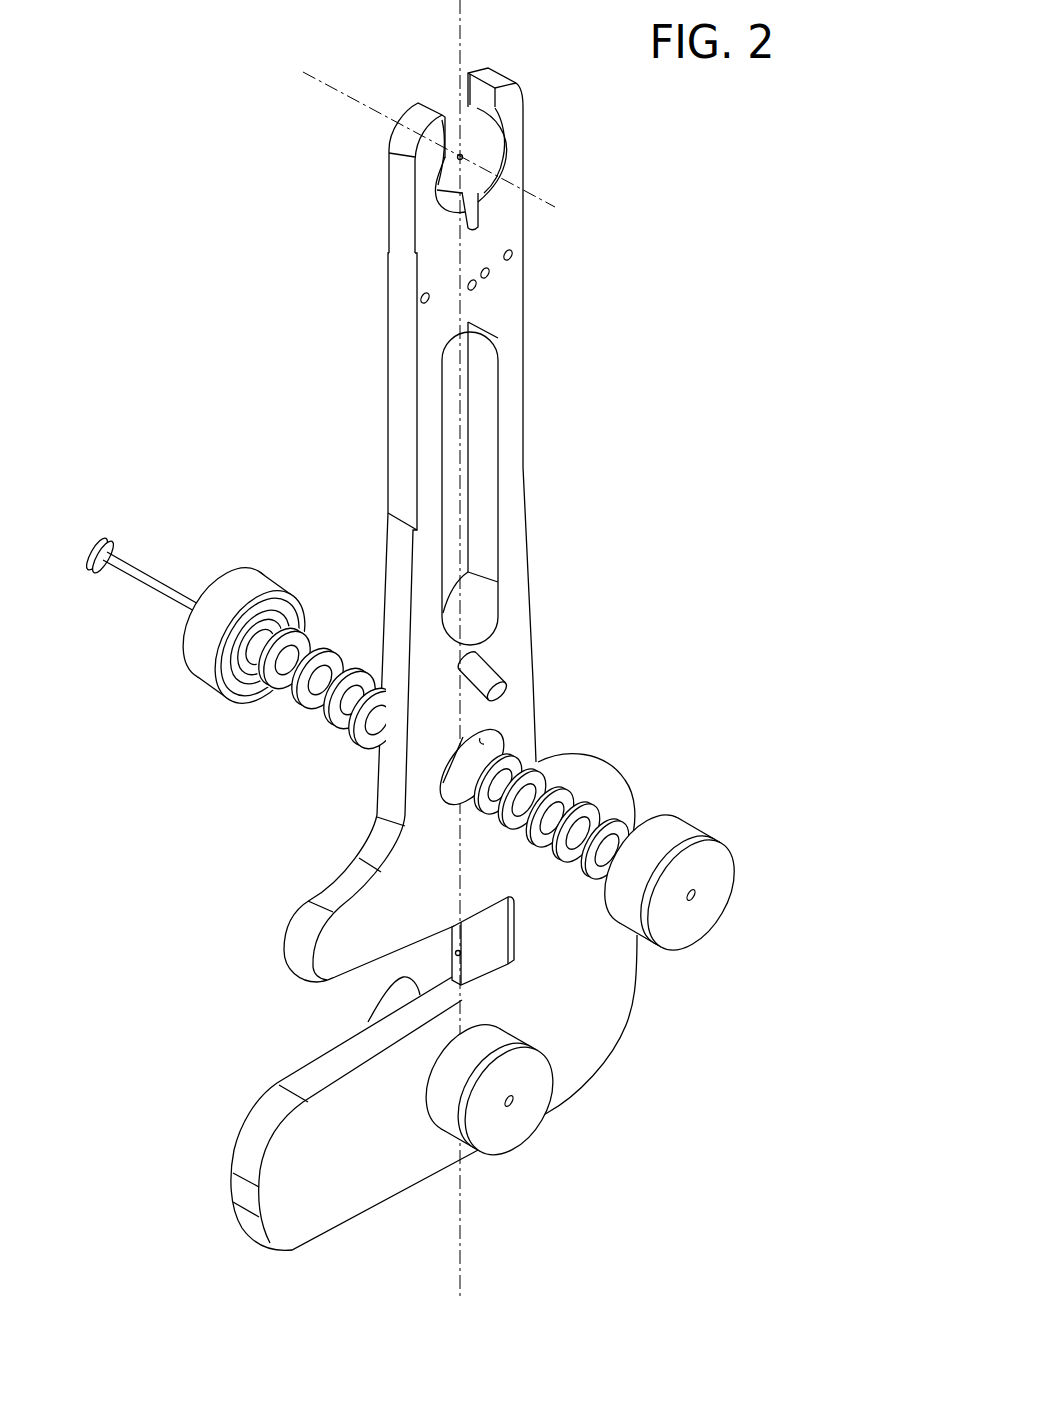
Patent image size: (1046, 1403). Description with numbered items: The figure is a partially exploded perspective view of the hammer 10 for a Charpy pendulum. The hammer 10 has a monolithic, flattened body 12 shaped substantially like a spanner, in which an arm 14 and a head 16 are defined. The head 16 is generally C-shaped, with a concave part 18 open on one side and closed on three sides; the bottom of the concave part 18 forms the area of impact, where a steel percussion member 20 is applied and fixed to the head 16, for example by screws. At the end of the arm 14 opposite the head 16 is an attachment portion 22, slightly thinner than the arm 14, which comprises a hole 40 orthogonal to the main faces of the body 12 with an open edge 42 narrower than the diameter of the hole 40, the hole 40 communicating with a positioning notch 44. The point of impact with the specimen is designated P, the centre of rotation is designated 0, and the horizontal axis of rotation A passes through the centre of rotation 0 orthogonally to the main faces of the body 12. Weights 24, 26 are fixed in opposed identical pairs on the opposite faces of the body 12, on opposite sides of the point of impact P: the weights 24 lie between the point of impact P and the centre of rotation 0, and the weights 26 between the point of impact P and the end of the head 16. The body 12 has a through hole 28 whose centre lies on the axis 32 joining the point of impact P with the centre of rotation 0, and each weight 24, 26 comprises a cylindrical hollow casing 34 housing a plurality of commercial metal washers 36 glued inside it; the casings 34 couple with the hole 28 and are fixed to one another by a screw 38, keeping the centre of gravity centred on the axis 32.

The hammer 10 is at (760, 290).
The monolithic body 12 is at (486, 643).
The arm 14 is at (461, 425).
The head 16 is at (643, 975).
The concave part 18 is at (358, 975).
The percussion member 20 is at (487, 943).
The attachment portion 22 is at (517, 167).
The weights 24 is at (250, 567).
The weights 26 is at (540, 1038).
The through hole 28 is at (482, 742).
The axis 32 is at (460, 450).
The cylindrical hollow casing 34 is at (195, 667).
The washers 36 is at (367, 750).
The screw 38 is at (135, 573).
The hole 40 is at (480, 183).
The open edge 42 is at (483, 97).
The positioning notch 44 is at (483, 233).
The centre of rotation 0 is at (455, 157).
The axis of rotation A is at (340, 97).
The point of impact P is at (460, 955).